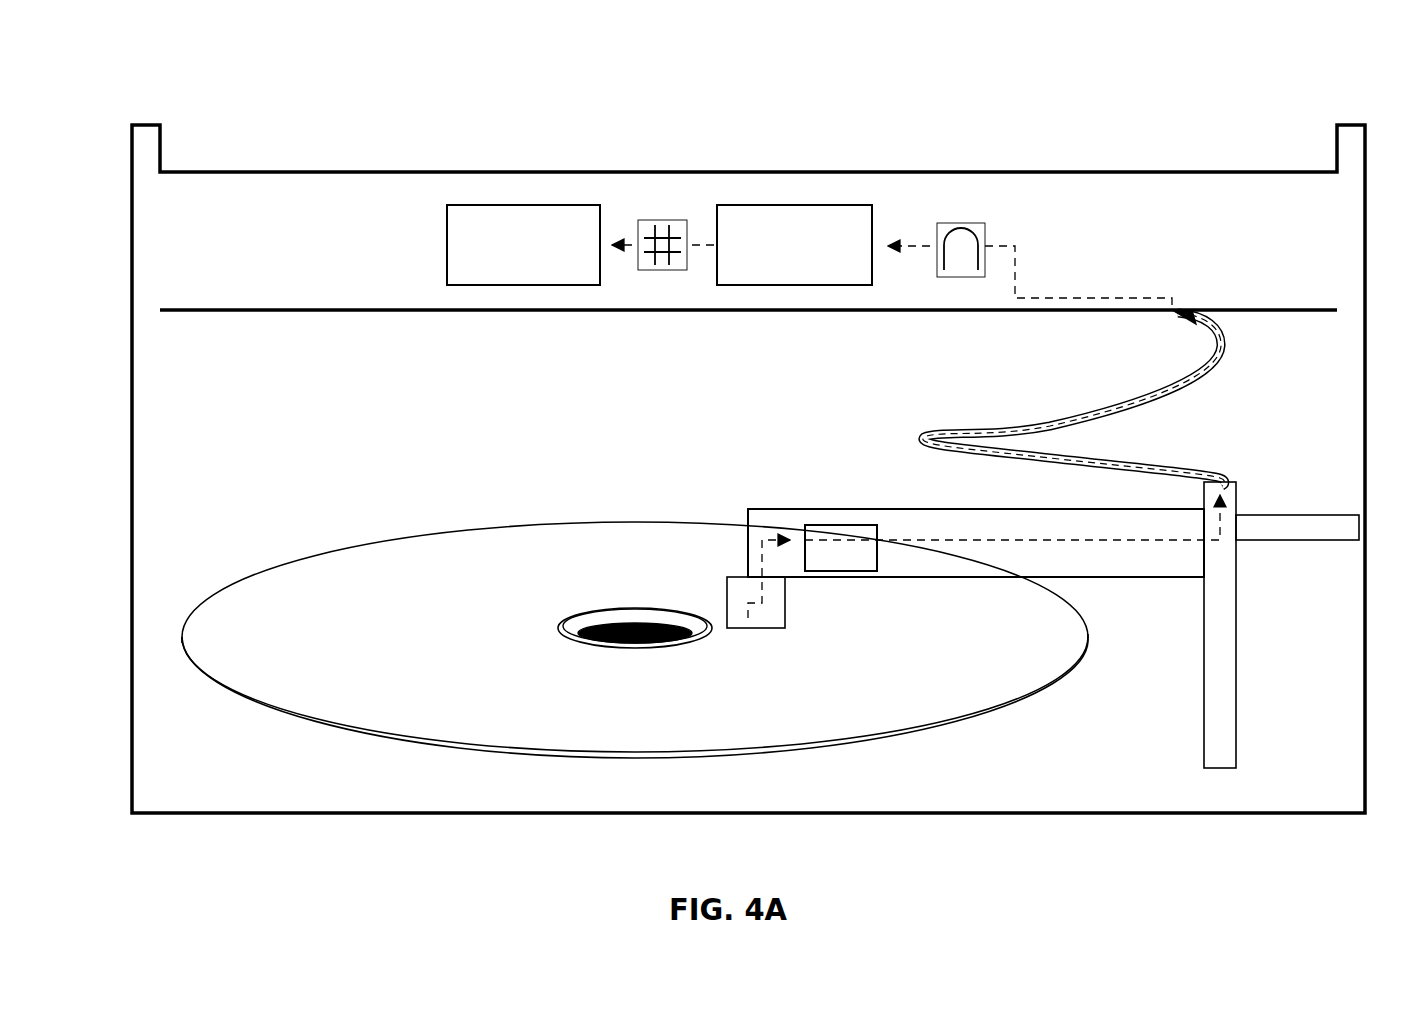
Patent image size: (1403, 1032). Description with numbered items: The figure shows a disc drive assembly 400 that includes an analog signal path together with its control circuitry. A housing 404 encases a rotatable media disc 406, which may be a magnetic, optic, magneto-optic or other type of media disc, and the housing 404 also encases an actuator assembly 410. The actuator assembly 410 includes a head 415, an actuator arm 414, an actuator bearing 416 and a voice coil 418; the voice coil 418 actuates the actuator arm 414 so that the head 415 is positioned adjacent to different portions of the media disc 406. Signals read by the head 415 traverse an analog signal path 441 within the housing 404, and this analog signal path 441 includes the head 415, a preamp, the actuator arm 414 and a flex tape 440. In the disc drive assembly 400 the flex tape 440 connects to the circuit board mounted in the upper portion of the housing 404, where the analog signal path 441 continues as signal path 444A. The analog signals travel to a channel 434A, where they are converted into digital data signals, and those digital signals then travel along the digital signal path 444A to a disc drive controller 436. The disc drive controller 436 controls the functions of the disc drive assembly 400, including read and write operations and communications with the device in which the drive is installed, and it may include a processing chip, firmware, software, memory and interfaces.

The disc drive assembly 400 is at (220, 112).
The housing 404 is at (268, 849).
The media disc 406 is at (635, 640).
The actuator assembly 410 is at (840, 479).
The actuator arm 414 is at (976, 543).
The head 415 is at (764, 618).
The actuator bearing 416 is at (1218, 660).
The voice coil 418 is at (1280, 568).
The channel 434A is at (794, 245).
The disc drive controller 436 is at (539, 245).
The flex tape 440 is at (1157, 393).
The analog signal path 441 is at (748, 632).
The analog signal path / digital signal path 444A is at (653, 220).